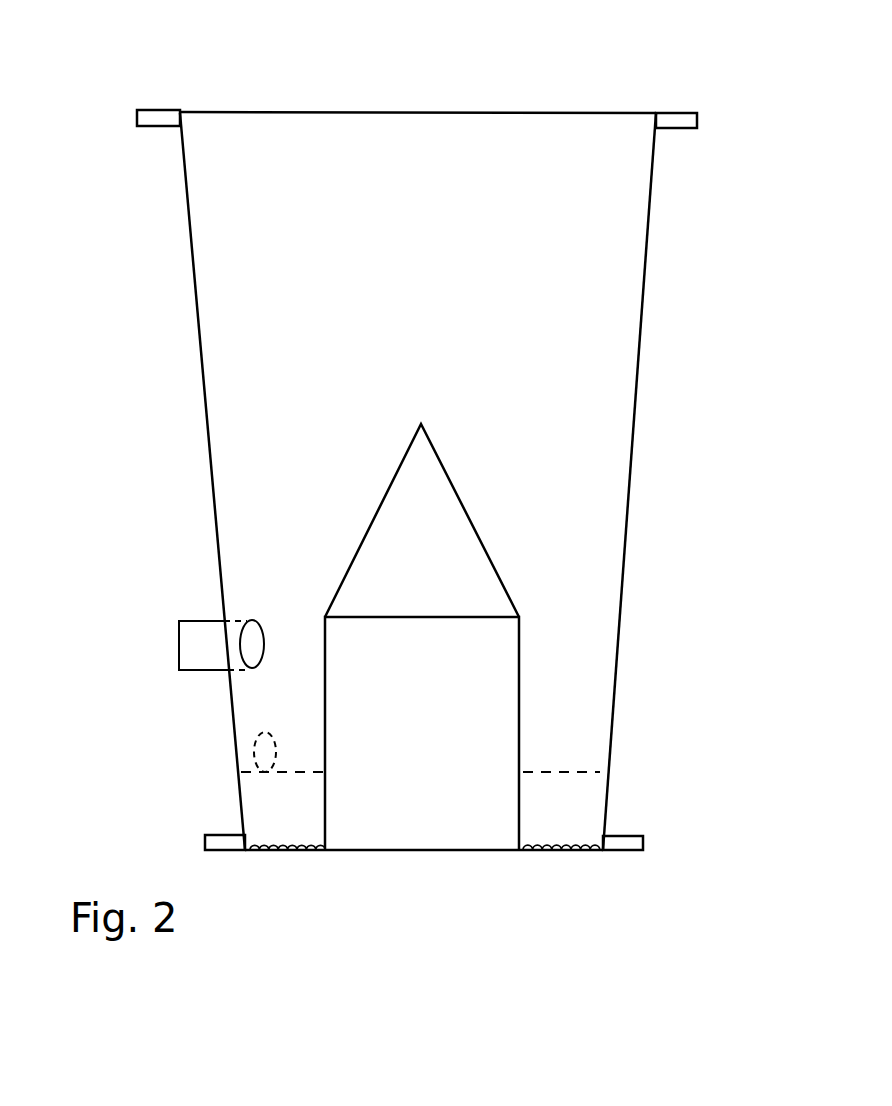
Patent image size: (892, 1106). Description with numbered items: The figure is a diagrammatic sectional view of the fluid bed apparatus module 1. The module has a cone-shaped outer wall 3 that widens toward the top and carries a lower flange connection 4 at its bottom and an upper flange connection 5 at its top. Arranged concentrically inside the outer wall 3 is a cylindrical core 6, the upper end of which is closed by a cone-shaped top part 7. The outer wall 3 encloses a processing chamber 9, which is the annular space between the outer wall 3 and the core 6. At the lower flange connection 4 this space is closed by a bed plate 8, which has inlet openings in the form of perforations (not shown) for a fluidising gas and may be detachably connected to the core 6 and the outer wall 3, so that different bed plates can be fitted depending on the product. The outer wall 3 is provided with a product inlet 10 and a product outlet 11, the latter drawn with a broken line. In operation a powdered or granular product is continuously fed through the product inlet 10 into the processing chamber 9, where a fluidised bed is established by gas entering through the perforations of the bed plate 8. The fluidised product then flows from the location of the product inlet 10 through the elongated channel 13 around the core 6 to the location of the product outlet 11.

The fluid bed apparatus module 1 is at (172, 456).
The cone-shaped outer wall 3 is at (629, 490).
The lower flange connection 4 is at (636, 846).
The upper flange connection 5 is at (685, 122).
The cylindrical core 6 is at (483, 712).
The cone-shaped top part 7 is at (455, 556).
The bed plate 8 is at (563, 852).
The processing chamber 9 is at (593, 538).
The product inlet 10 is at (195, 650).
The product outlet 11 is at (252, 745).
The elongated channel 13 is at (572, 808).